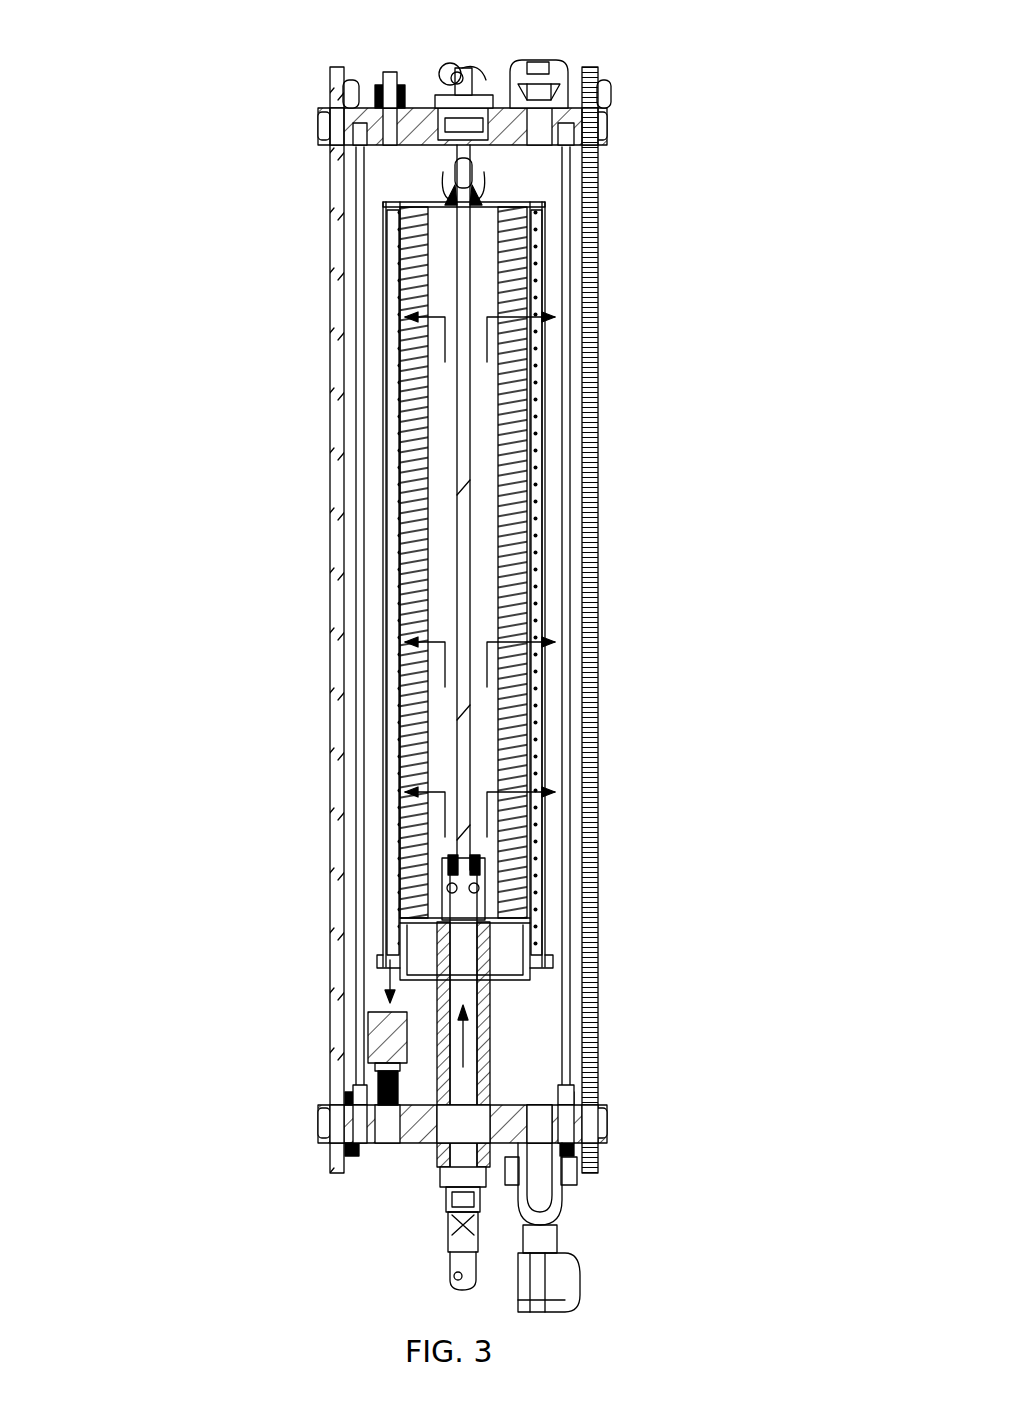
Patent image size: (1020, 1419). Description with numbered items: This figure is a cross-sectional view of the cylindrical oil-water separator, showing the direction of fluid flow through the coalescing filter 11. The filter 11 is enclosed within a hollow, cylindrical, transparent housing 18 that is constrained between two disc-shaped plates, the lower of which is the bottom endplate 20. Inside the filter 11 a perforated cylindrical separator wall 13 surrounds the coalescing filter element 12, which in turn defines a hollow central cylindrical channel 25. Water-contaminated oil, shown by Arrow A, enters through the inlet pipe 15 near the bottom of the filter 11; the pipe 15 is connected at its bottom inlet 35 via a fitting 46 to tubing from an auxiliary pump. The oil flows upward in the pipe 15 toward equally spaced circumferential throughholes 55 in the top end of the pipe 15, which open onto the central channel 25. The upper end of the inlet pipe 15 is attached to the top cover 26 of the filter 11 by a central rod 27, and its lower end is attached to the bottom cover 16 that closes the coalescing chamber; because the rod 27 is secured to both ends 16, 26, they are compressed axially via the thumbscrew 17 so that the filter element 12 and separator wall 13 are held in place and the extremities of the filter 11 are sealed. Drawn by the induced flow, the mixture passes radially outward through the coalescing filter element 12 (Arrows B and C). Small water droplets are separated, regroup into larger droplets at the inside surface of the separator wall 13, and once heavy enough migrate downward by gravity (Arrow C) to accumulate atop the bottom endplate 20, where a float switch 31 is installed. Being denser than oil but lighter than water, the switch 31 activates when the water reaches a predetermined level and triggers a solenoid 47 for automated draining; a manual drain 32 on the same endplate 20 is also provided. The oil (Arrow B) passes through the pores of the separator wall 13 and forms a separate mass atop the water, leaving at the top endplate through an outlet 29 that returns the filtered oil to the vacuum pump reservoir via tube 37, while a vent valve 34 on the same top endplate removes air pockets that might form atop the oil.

The coalescing filter 11 is at (546, 257).
The coalescing filter element 12 is at (405, 383).
The separator wall 13 is at (397, 238).
The inlet pipe 15 is at (460, 1125).
The bottom cover 16 is at (510, 973).
The thumbscrew 17 is at (350, 92).
The housing 18 is at (360, 452).
The bottom endplate 20 is at (410, 1130).
The central cylindrical channel 25 is at (490, 560).
The top cover 26 is at (533, 204).
The central rod 27 is at (470, 442).
The outlet 29 is at (442, 74).
The float switch 31 is at (380, 1032).
The manual drain 32 is at (562, 1284).
The vent valve 34 is at (558, 62).
The bottom inlet 35 is at (455, 1215).
The tube 37 is at (422, 66).
The fitting 46 is at (455, 1284).
The solenoid 47 is at (542, 1247).
The circumferential throughholes 55 is at (478, 888).
The Arrow A is at (470, 1035).
The Arrow B is at (471, 142).
The Arrow C is at (440, 330).